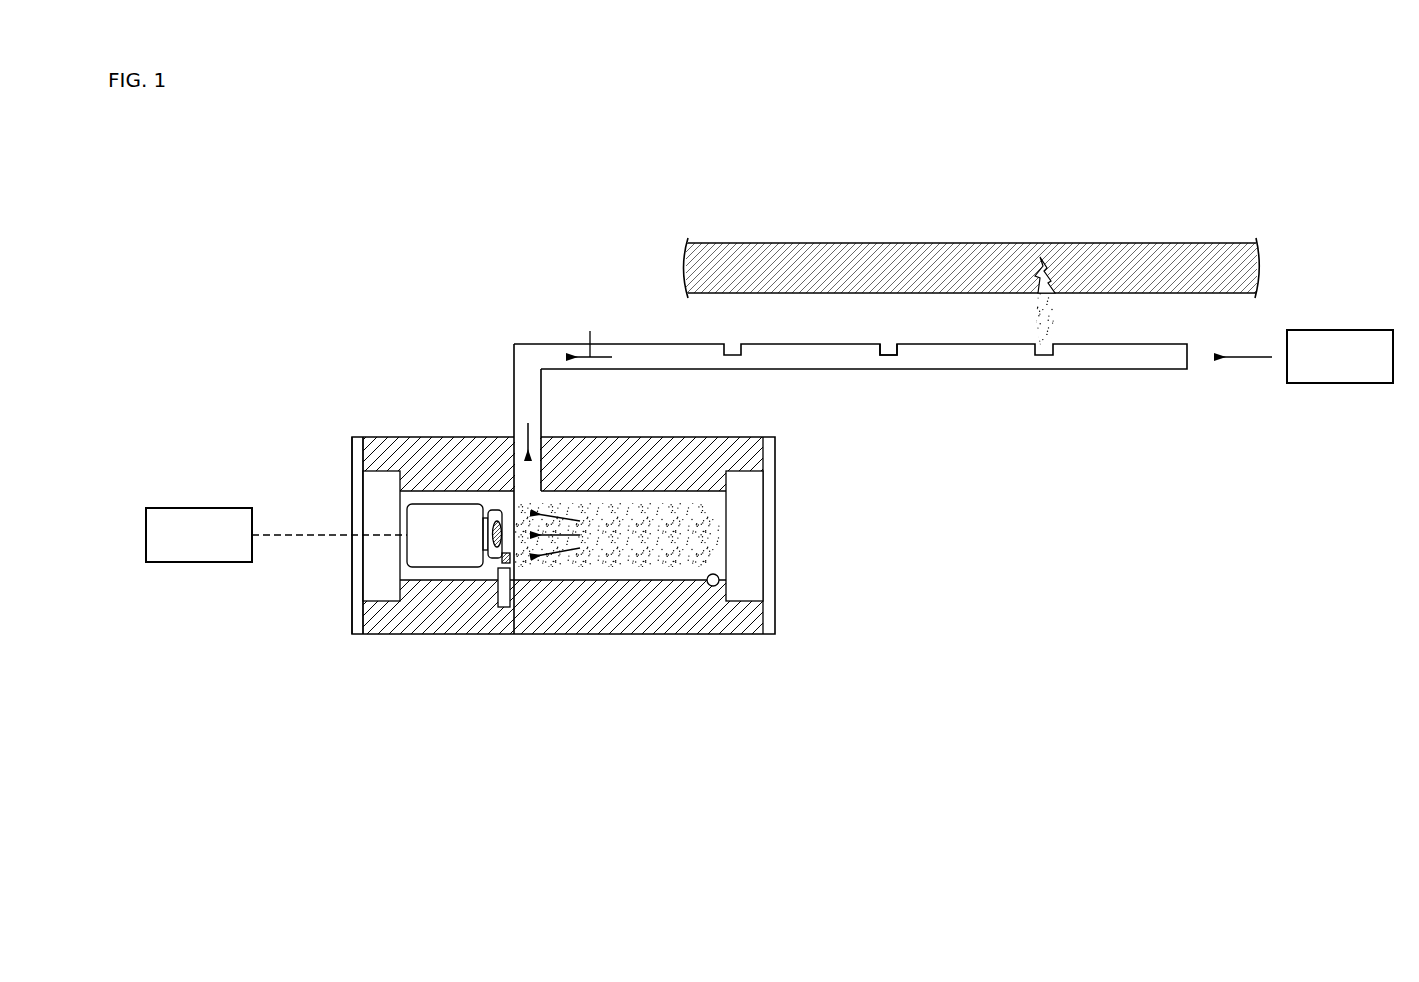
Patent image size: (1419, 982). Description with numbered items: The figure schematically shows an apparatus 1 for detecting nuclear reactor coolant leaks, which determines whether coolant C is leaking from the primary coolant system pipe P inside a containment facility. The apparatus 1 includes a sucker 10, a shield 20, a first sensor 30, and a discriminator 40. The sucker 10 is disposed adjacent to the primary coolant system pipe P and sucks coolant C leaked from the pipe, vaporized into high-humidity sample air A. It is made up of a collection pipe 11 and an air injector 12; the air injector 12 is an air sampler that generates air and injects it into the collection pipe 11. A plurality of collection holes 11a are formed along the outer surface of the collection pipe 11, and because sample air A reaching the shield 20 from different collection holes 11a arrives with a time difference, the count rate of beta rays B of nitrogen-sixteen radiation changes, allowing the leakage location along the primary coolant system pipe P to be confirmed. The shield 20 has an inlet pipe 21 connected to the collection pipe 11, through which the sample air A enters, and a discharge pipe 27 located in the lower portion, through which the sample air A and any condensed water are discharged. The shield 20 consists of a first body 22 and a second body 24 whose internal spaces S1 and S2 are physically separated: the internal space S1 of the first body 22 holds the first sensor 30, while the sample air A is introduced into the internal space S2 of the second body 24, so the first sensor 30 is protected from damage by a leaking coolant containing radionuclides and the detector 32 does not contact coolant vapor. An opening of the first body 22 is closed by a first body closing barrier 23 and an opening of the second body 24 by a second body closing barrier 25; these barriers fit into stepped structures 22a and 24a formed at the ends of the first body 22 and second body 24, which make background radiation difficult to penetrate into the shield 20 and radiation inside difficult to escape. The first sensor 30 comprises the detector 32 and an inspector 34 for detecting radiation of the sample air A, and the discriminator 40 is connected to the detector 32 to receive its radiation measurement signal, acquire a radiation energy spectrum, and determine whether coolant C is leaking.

The apparatus for detecting nuclear reactor coolant leaks 1 is at (733, 177).
The sucker 10 is at (953, 396).
The collection pipe 11 is at (850, 375).
The collection holes 11a is at (890, 343).
The air injector 12 is at (1340, 383).
The shield 20 is at (576, 513).
The inlet pipe 21 is at (539, 343).
The first body 22 is at (432, 445).
The stepped structure 22a is at (383, 472).
The first body closing barrier 23 is at (360, 577).
The second body 24 is at (655, 445).
The stepped structure 24a is at (745, 471).
The second body closing barrier 25 is at (763, 560).
The discharge pipe 27 is at (715, 587).
The first sensor 30 is at (460, 619).
The detector 32 is at (455, 553).
The inspector 34 is at (505, 590).
The discriminator 40 is at (199, 508).
The sample air A is at (919, 332).
The beta rays B is at (563, 505).
The coolant C is at (1052, 322).
The primary coolant system pipe P is at (1255, 268).
The internal space of the first body S1 is at (432, 576).
The internal space of the second body S2 is at (655, 545).